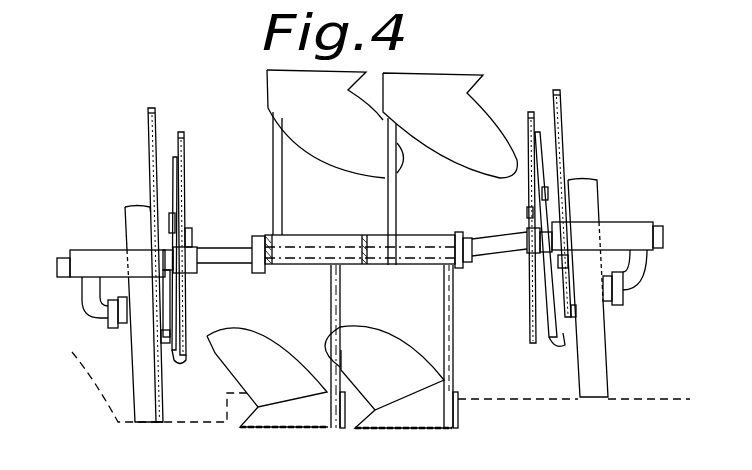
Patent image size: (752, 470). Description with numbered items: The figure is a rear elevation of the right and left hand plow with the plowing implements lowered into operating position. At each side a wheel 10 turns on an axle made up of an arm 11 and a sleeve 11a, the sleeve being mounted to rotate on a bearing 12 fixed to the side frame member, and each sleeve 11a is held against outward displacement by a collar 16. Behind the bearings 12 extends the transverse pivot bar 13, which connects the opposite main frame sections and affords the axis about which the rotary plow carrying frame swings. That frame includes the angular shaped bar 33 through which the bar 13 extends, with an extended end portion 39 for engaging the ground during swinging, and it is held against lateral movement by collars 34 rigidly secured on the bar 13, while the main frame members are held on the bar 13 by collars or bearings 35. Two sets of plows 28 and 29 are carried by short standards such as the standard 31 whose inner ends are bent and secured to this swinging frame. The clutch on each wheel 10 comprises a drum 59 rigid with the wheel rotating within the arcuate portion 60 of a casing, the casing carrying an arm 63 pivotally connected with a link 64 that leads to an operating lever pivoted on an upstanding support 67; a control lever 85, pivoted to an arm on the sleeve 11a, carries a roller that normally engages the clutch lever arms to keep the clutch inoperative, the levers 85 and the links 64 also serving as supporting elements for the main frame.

The wheel 10 is at (143, 397).
The arm portion of axle 11 is at (93, 303).
The sleeve portion of axle 11a is at (632, 212).
The bearing 12 is at (60, 268).
The transverse bar 13 is at (221, 253).
The collar 16 is at (70, 278).
The set of plows 28 is at (264, 345).
The set of plows 29 is at (357, 155).
The standard 31 is at (290, 200).
The angular shaped bar 33 is at (312, 266).
The collar 34 is at (257, 243).
The collar or bearing 35 is at (547, 246).
The extended end portion 39 is at (371, 238).
The drum 59 is at (160, 325).
The arcuate portion of casing 60 is at (177, 313).
The arm 63 is at (178, 364).
The link 64 is at (180, 302).
The upstanding support 67 is at (185, 180).
The control lever 85 is at (149, 120).